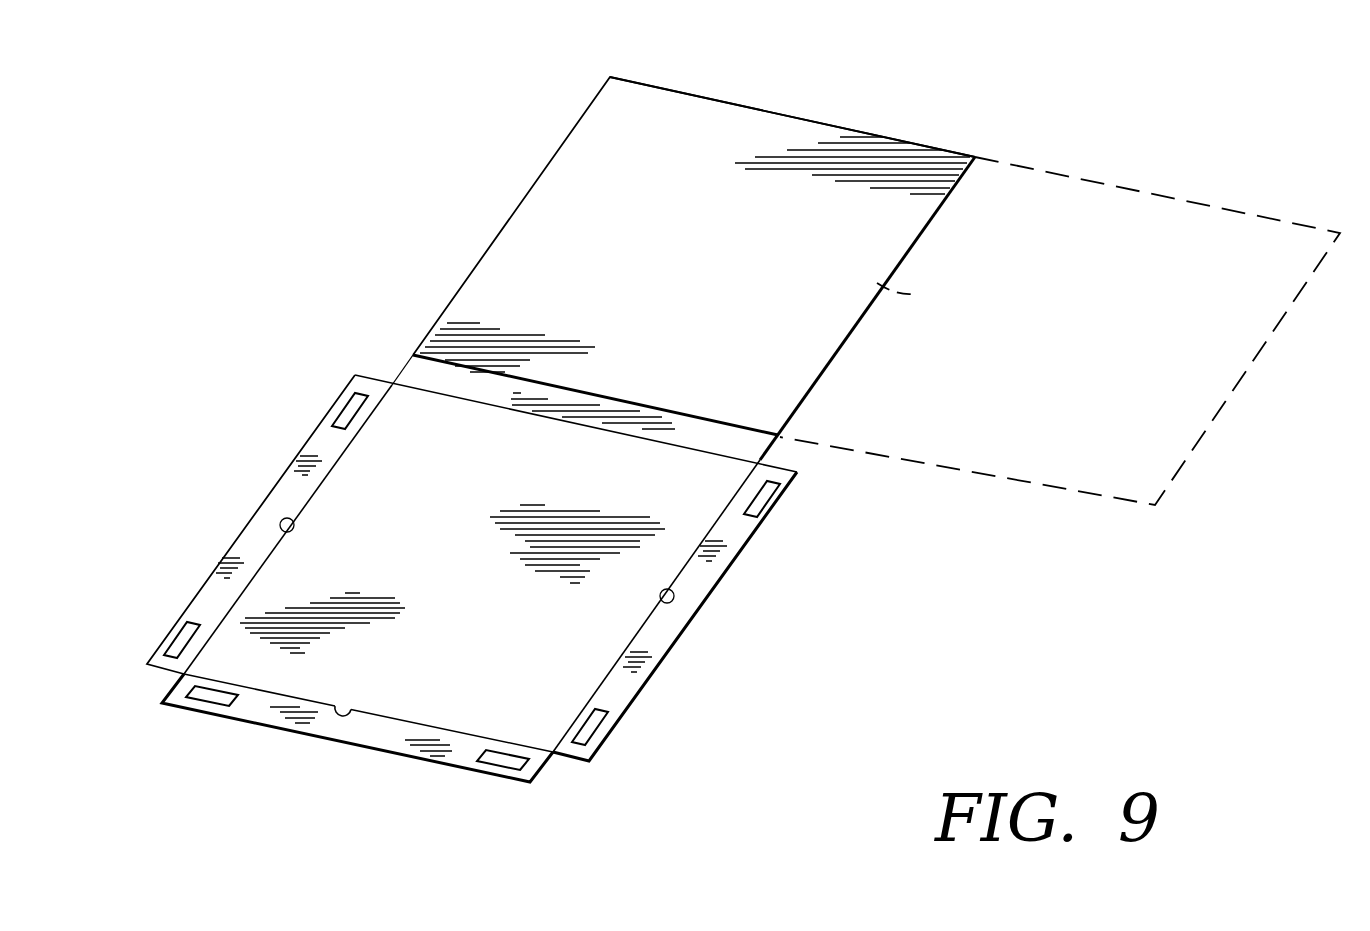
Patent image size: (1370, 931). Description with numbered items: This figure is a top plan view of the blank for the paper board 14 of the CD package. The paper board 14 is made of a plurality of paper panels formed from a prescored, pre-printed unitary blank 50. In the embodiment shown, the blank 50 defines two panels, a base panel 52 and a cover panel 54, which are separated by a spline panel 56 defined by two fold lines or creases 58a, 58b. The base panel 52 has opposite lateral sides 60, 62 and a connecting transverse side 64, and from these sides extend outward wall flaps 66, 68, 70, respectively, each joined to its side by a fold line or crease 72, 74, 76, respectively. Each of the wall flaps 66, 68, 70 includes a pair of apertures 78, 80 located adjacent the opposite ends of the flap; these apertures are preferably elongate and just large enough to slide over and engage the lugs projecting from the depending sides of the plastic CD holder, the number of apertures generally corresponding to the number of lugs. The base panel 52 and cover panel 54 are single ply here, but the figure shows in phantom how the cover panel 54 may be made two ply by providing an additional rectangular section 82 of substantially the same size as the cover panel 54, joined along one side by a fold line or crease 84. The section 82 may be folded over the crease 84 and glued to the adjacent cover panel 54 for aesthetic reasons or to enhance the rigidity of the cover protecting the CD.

The paper board 14 is at (745, 693).
The blank 50 is at (450, 300).
The base panel 52 is at (494, 568).
The cover panel 54 is at (737, 116).
The spline panel 56 is at (398, 360).
The fold line 58a is at (606, 437).
The fold line 58b is at (572, 396).
The lateral side 60 is at (297, 519).
The lateral side 62 is at (668, 590).
The transverse side 64 is at (340, 700).
The wall flap 66 is at (256, 537).
The wall flap 68 is at (700, 612).
The wall flap 70 is at (368, 735).
The fold line 72 is at (344, 445).
The fold line 74 is at (703, 538).
The fold line 76 is at (418, 715).
The aperture 78 is at (178, 636).
The aperture 80 is at (345, 410).
The rectangular section 82 is at (1215, 238).
The fold line 84 is at (912, 294).